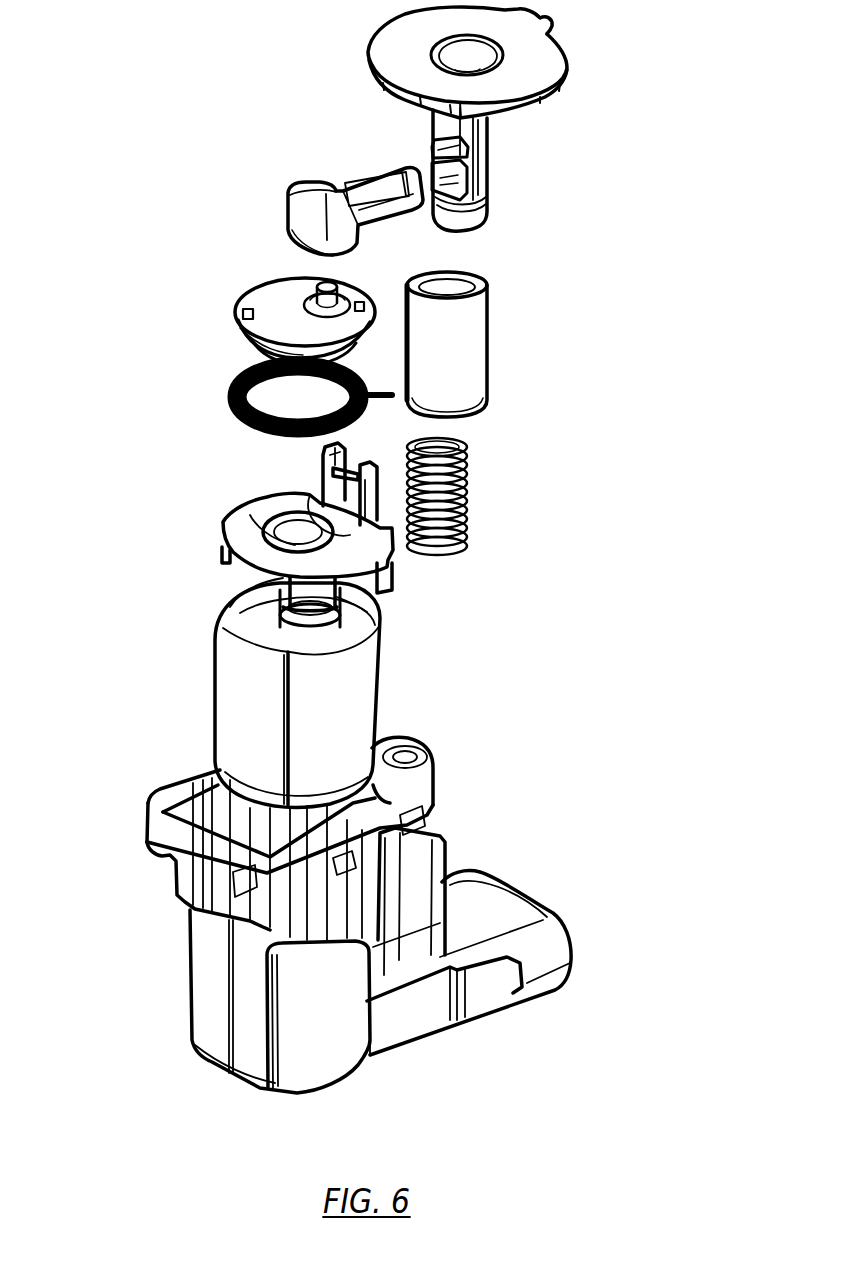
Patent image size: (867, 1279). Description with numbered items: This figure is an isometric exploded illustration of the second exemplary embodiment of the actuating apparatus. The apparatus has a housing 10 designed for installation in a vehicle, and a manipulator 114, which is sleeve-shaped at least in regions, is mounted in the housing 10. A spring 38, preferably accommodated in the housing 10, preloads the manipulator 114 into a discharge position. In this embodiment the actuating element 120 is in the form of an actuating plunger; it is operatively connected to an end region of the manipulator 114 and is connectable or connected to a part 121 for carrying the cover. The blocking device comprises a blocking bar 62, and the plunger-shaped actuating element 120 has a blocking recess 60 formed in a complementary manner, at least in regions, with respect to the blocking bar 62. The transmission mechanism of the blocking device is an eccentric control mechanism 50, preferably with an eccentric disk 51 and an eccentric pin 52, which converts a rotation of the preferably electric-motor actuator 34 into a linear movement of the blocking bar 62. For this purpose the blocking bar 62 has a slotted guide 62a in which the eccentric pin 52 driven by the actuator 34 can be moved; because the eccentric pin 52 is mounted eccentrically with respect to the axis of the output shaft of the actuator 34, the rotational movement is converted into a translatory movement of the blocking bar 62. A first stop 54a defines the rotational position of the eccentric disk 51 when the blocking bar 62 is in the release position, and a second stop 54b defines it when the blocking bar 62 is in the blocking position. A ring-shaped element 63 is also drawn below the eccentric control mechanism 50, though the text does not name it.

The housing 10 is at (222, 980).
The actuator 34 is at (248, 680).
The spring 38 is at (515, 462).
The eccentric control mechanism 50 is at (222, 296).
The eccentric disk 51 is at (237, 326).
The eccentric pin 52 is at (300, 284).
The first stop 54a is at (362, 302).
The second stop 54b is at (242, 300).
The blocking recess 60 is at (445, 160).
The blocking bar 62 is at (290, 198).
The slotted guide 62a is at (304, 240).
The O-ring 63 is at (232, 406).
The manipulator 114 is at (490, 328).
The actuating element 120 is at (460, 135).
The part for carrying the cover 121 is at (535, 78).